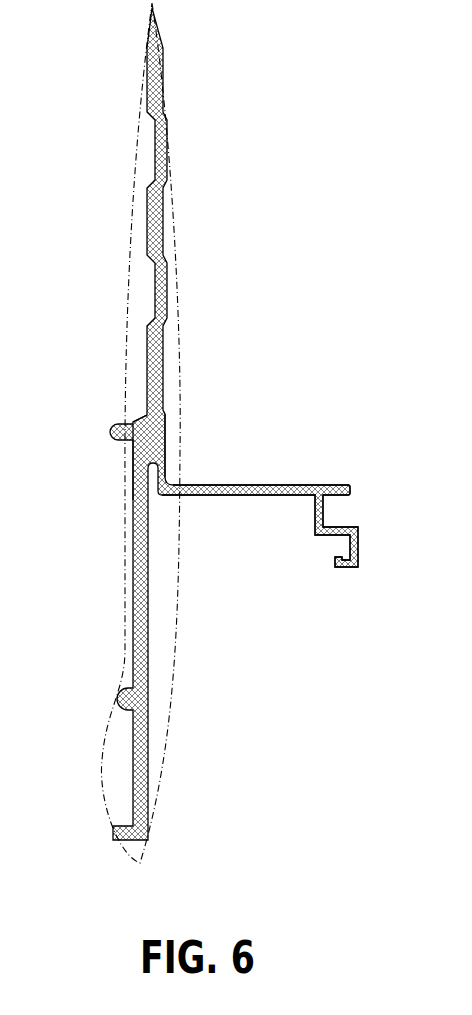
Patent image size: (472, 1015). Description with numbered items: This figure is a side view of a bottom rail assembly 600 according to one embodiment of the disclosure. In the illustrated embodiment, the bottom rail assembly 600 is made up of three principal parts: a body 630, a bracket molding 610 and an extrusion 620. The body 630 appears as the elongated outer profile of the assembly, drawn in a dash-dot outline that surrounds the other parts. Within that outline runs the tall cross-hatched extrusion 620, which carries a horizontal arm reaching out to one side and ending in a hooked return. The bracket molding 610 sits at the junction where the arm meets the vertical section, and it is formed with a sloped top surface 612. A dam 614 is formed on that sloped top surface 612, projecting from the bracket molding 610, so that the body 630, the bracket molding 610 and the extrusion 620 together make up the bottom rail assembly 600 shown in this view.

The bottom rail assembly 600 is at (270, 140).
The bracket molding 610 is at (127, 441).
The sloped top surface 612 is at (125, 427).
The dam 614 is at (137, 418).
The extrusion 620 is at (252, 485).
The body 630 is at (177, 652).